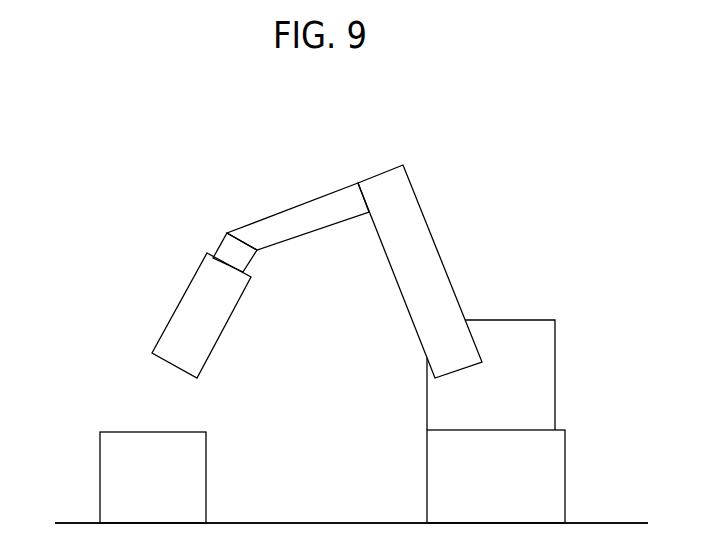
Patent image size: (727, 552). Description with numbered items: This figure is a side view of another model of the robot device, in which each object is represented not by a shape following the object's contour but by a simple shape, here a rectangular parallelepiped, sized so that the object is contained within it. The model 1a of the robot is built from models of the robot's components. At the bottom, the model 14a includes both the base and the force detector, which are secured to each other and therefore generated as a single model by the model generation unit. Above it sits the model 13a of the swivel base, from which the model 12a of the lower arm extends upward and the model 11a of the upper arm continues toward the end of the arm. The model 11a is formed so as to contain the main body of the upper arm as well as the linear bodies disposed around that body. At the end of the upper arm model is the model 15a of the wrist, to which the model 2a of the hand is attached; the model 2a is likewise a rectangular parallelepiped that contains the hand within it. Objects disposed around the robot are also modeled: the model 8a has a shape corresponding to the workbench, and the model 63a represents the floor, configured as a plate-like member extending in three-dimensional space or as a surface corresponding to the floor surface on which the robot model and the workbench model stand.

The model of the robot 1a is at (386, 165).
The model of the hand 2a is at (193, 302).
The model of the workbench 8a is at (115, 478).
The model of the upper arm 11a is at (305, 218).
The model of the lower arm 12a is at (428, 242).
The model of the swivel base 13a is at (542, 382).
The model of the base and the force detector 14a is at (550, 485).
The model of the wrist 15a is at (231, 249).
The model of the floor 63a is at (373, 522).